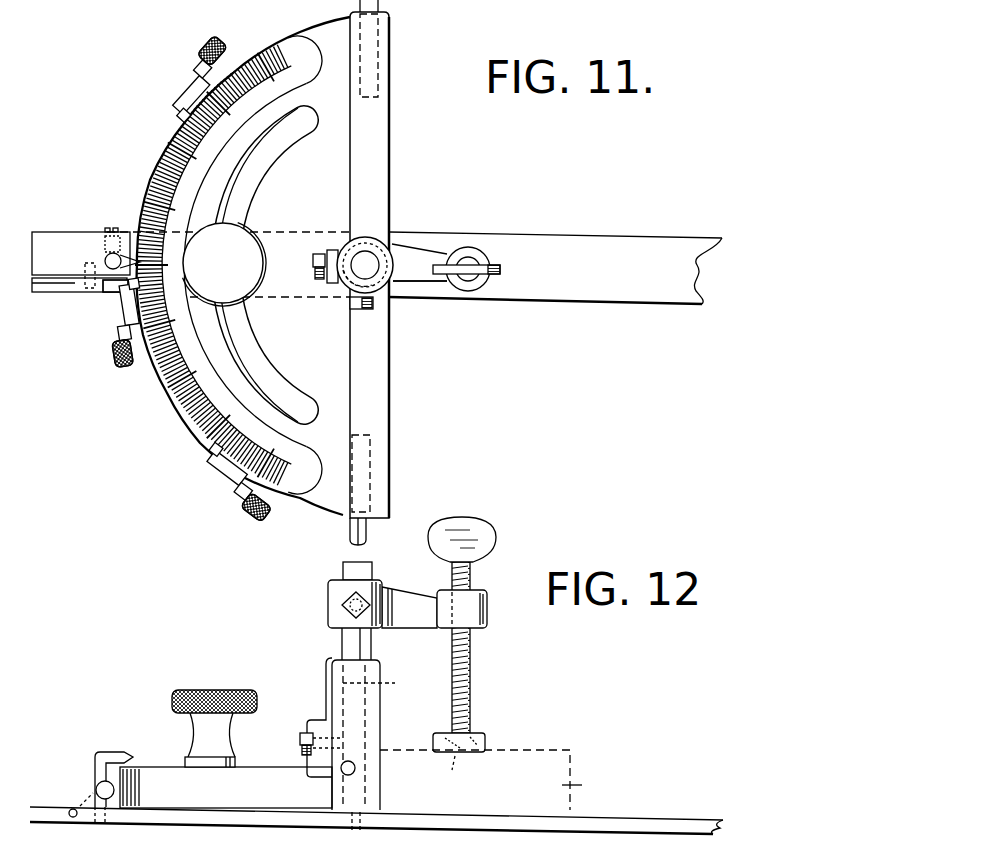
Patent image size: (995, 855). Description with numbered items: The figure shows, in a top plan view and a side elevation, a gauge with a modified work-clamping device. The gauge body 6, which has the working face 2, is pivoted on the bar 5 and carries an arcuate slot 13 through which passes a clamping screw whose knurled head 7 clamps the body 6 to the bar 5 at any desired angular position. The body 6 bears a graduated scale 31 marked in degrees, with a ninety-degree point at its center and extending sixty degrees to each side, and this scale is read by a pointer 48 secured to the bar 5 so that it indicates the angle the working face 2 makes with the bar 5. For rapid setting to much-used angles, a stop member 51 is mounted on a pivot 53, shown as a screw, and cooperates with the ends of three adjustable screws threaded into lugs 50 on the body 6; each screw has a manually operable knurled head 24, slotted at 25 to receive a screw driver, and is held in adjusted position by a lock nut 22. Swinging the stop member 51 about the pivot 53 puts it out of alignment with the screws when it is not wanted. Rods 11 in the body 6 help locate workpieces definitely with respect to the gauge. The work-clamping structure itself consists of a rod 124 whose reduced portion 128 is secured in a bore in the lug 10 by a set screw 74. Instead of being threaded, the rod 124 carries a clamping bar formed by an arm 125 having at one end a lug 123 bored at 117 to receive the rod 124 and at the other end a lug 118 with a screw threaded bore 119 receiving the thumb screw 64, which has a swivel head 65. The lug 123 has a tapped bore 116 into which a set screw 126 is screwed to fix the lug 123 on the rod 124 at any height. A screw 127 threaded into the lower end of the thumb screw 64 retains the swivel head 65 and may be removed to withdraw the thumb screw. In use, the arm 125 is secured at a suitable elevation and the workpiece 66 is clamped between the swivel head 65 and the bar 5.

In FIG. 11, the working face 2 is at (389, 400).
In FIG. 12, the working face 2 is at (382, 714).
In FIG. 11, the bar 5 is at (622, 252).
In FIG. 12, the bar 5 is at (657, 827).
In FIG. 11, the body member 6 is at (328, 497).
In FIG. 12, the body member 6 is at (163, 783).
In FIG. 11, the knurled head 7 is at (240, 245).
In FIG. 12, the knurled head 7 is at (221, 703).
In FIG. 12, the lug 10 is at (330, 686).
In FIG. 11, the rods 11 is at (367, 532).
In FIG. 12, the rods 11 is at (356, 768).
In FIG. 11, the arcuate slot 13 is at (293, 128).
In FIG. 11, the lock nut 22 is at (188, 70).
In FIG. 11, the knurled head 24 is at (210, 47).
In FIG. 11, the slot 25 is at (224, 47).
In FIG. 11, the graduated scale 31 is at (175, 396).
In FIG. 11, the pointer 48 is at (138, 258).
In FIG. 12, the pointer 48 is at (122, 753).
In FIG. 11, the lugs 50 is at (180, 95).
In FIG. 11, the stop member 51 is at (107, 288).
In FIG. 12, the stop member 51 is at (84, 800).
In FIG. 11, the pivot 53 is at (90, 289).
In FIG. 11, the thumb screw 64 is at (501, 269).
In FIG. 12, the thumb screw 64 is at (482, 533).
In FIG. 12, the swivel head 65 is at (487, 741).
In FIG. 12, the workpiece 66 is at (498, 780).
In FIG. 11, the set screw 74 is at (320, 253).
In FIG. 12, the set screw 74 is at (303, 735).
In FIG. 11, the tapped bore 116 is at (357, 306).
In FIG. 11, the bore 117 is at (395, 284).
In FIG. 12, the lug 118 is at (487, 626).
In FIG. 12, the screw threaded bore 119 is at (472, 586).
In FIG. 11, the lug 123 is at (366, 244).
In FIG. 12, the lug 123 is at (382, 630).
In FIG. 11, the rod 124 is at (368, 262).
In FIG. 12, the rod 124 is at (350, 643).
In FIG. 11, the arm 125 is at (433, 262).
In FIG. 12, the arm 125 is at (403, 603).
In FIG. 11, the set screw 126 is at (347, 293).
In FIG. 12, the set screw 126 is at (343, 598).
In FIG. 12, the screw 127 is at (462, 777).
In FIG. 12, the reduced portion 128 is at (392, 684).